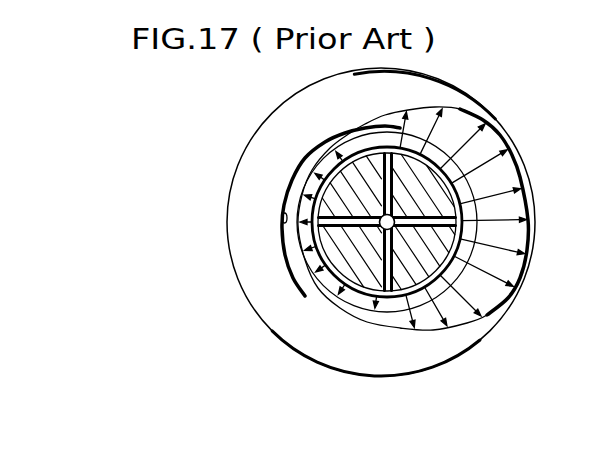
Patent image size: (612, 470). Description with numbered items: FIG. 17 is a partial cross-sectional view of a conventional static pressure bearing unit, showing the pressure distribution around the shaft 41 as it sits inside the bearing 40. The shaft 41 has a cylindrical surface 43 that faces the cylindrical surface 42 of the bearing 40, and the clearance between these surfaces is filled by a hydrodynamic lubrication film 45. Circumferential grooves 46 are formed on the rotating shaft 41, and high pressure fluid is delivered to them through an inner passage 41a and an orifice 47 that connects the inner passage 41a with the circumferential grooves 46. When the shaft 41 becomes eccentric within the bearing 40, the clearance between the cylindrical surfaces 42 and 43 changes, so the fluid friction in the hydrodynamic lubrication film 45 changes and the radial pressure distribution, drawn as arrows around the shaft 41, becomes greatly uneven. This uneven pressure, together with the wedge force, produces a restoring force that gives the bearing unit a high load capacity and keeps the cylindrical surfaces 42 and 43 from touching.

The bearing 40 is at (384, 377).
The shaft 41 is at (318, 170).
The inner passage 41a is at (458, 324).
The cylindrical surface 42 is at (283, 216).
The cylindrical surface 43 is at (305, 240).
The hydrodynamic lubrication film 45 is at (293, 191).
The circumferential grooves 46 is at (322, 266).
The orifice 47 is at (303, 262).